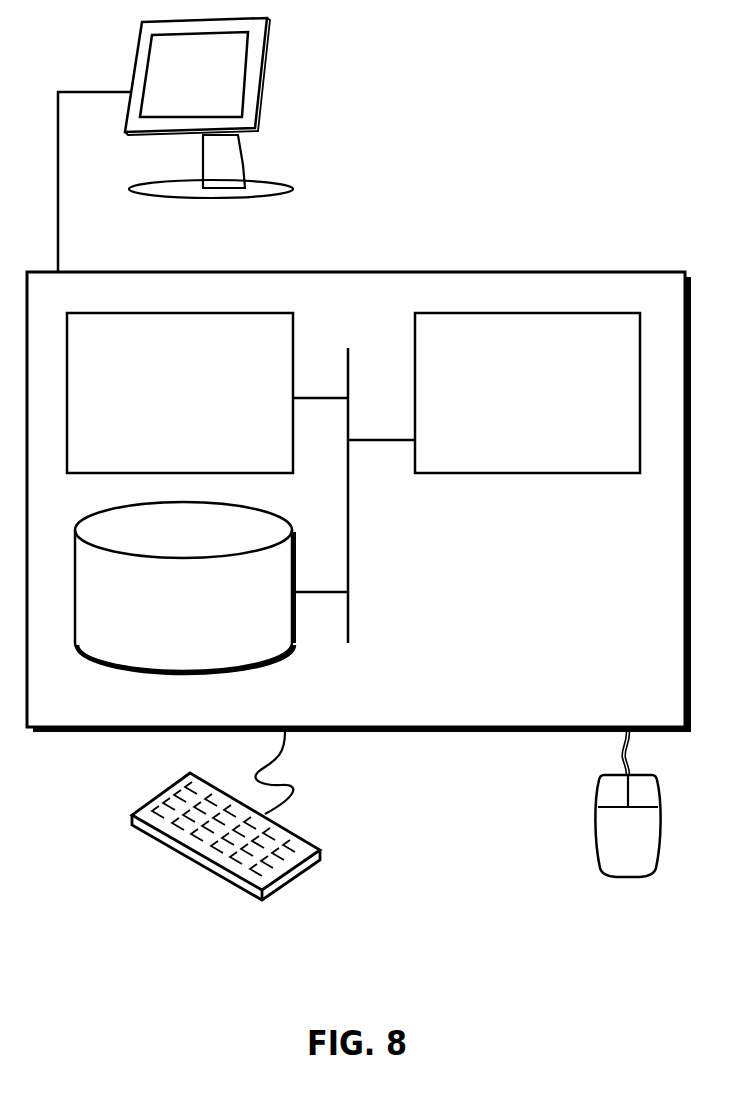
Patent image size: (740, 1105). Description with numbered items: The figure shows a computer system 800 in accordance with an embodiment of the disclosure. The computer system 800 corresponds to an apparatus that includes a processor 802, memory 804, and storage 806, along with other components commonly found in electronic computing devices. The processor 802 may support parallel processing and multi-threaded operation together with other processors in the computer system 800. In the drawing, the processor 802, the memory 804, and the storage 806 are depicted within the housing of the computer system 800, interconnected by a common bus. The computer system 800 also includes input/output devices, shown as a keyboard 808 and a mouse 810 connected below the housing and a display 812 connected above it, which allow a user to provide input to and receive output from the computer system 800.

The computer system 800 is at (403, 250).
The processor 802 is at (510, 406).
The memory 804 is at (159, 405).
The storage 806 is at (166, 617).
The keyboard 808 is at (152, 837).
The mouse 810 is at (607, 848).
The display 812 is at (175, 145).